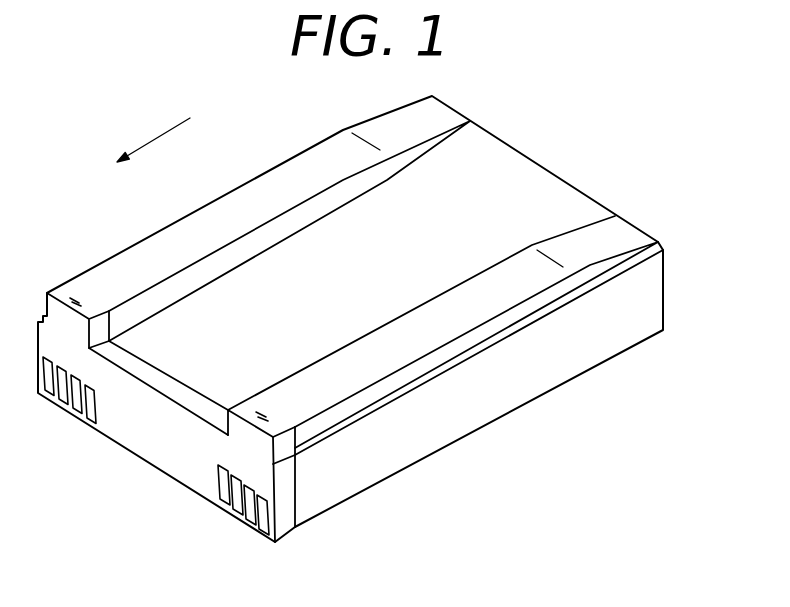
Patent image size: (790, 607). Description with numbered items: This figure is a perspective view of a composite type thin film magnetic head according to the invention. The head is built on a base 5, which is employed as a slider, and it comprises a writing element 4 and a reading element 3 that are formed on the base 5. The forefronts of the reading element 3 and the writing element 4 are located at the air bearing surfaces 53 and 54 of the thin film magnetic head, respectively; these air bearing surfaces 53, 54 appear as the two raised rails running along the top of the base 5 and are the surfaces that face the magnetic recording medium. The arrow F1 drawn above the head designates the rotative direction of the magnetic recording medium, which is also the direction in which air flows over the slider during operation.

The reading element 3 is at (78, 293).
The writing element 4 is at (76, 300).
The base 5 is at (516, 388).
The air bearing surface 53 is at (238, 207).
The air bearing surface 54 is at (388, 337).
The arrow F1 is at (160, 138).